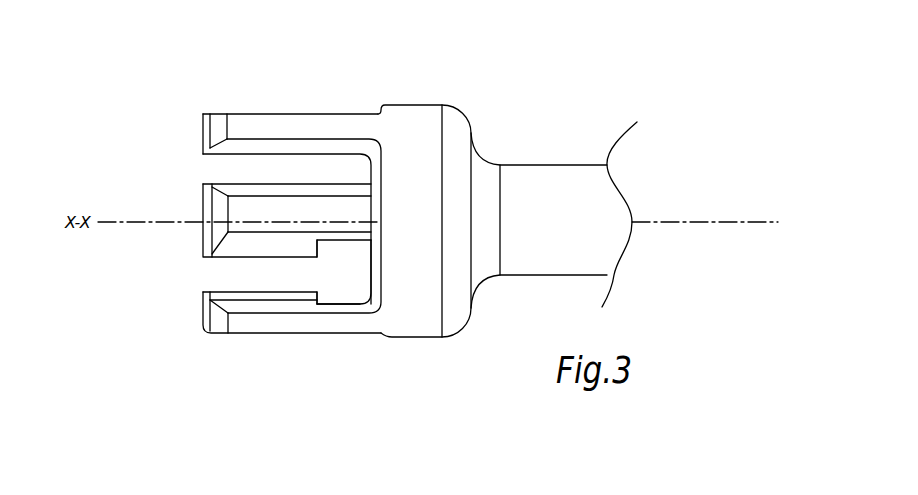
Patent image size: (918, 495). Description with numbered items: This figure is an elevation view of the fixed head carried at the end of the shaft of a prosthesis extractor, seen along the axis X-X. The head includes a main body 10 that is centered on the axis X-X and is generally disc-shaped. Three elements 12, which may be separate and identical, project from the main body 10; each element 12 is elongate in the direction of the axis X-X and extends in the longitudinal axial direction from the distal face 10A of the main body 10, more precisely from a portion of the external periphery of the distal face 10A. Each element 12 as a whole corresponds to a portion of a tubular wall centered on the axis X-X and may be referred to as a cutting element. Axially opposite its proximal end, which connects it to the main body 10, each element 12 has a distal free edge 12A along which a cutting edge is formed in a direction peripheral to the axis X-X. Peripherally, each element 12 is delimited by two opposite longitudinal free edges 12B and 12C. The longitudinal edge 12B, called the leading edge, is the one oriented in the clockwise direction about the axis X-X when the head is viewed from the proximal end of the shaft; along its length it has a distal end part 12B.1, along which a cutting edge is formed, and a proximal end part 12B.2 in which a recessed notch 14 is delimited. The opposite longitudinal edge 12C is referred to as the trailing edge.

The main body 10 is at (403, 128).
The distal face 10A is at (359, 168).
The element 12 is at (288, 207).
The distal free edge 12A is at (193, 137).
The longitudinal free edge 12B is at (216, 261).
The distal end part 12B.1 is at (242, 283).
The proximal end part 12B.2 is at (331, 287).
The longitudinal free edge 12C is at (214, 160).
The recessed notch 14 is at (352, 240).